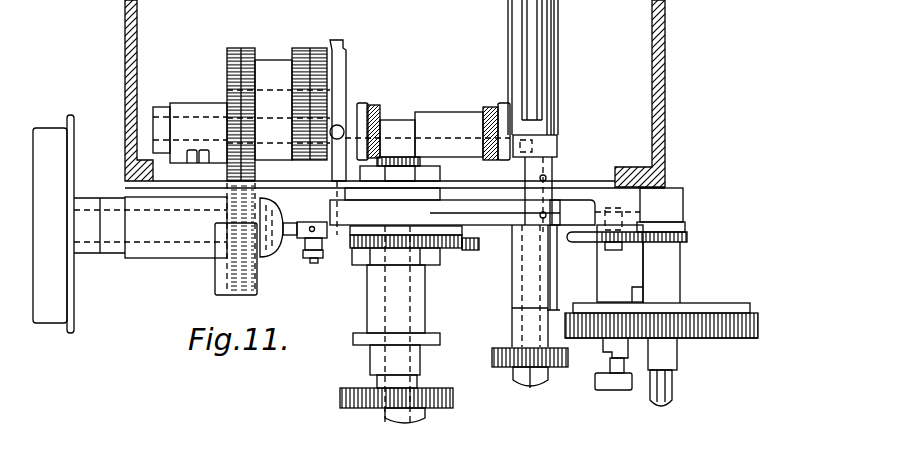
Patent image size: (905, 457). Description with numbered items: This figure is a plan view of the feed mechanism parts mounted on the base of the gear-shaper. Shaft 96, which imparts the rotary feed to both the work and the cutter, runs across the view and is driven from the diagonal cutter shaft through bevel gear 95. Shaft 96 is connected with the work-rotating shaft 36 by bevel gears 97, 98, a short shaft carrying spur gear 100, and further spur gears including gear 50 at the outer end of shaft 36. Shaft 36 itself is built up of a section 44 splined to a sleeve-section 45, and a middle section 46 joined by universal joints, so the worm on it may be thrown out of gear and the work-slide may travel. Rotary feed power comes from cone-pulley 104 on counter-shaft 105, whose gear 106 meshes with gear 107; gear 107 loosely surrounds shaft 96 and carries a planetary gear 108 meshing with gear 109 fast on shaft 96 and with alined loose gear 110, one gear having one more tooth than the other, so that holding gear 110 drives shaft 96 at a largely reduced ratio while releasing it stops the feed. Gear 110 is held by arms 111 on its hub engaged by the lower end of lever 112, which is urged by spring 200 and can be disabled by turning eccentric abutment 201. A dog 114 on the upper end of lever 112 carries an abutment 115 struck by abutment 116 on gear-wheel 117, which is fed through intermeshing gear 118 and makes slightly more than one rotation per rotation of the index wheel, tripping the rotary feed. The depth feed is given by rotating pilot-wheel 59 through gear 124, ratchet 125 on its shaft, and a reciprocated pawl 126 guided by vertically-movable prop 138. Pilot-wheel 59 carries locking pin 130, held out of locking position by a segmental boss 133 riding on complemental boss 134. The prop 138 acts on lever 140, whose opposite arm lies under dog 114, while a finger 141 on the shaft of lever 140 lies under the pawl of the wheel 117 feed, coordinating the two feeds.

The shaft 36 is at (395, 94).
The section 44 is at (541, 35).
The middle section 46 is at (560, 97).
The third arm or finger 141 is at (548, 140).
The cone-pulley 104 is at (50, 138).
The counter-shaft 105 is at (88, 210).
The gear 106 is at (215, 285).
The gear 107 is at (227, 80).
The shaft 96 is at (183, 118).
The planetary gear 108 is at (300, 47).
The gear 109 is at (327, 95).
The gear 110 is at (325, 110).
The arms 111 is at (345, 52).
The bevel gear 97 is at (378, 112).
The bevel gear 98 is at (400, 155).
The bevel gear 95 is at (492, 115).
The dog or latch 114 is at (368, 213).
The lever 140 is at (578, 213).
The prop 138 is at (625, 230).
The ratchet 125 is at (687, 236).
The pawl 126 is at (643, 245).
The gear 124 is at (662, 328).
The pilot-wheel 59 is at (715, 338).
The complemental boss 134 is at (640, 378).
The segmental boss 133 is at (603, 362).
The locking pin 130 is at (617, 390).
The spring 200 is at (260, 238).
The eccentric abutment 201 is at (300, 243).
The lever 112 is at (343, 253).
The abutment 115 is at (390, 236).
The abutment 116 is at (440, 248).
The intermeshing gear 118 is at (479, 247).
The gear-wheel 117 is at (378, 252).
The spur gear 100 is at (430, 405).
The sleeve-section 45 is at (522, 330).
The gear 50 is at (492, 358).